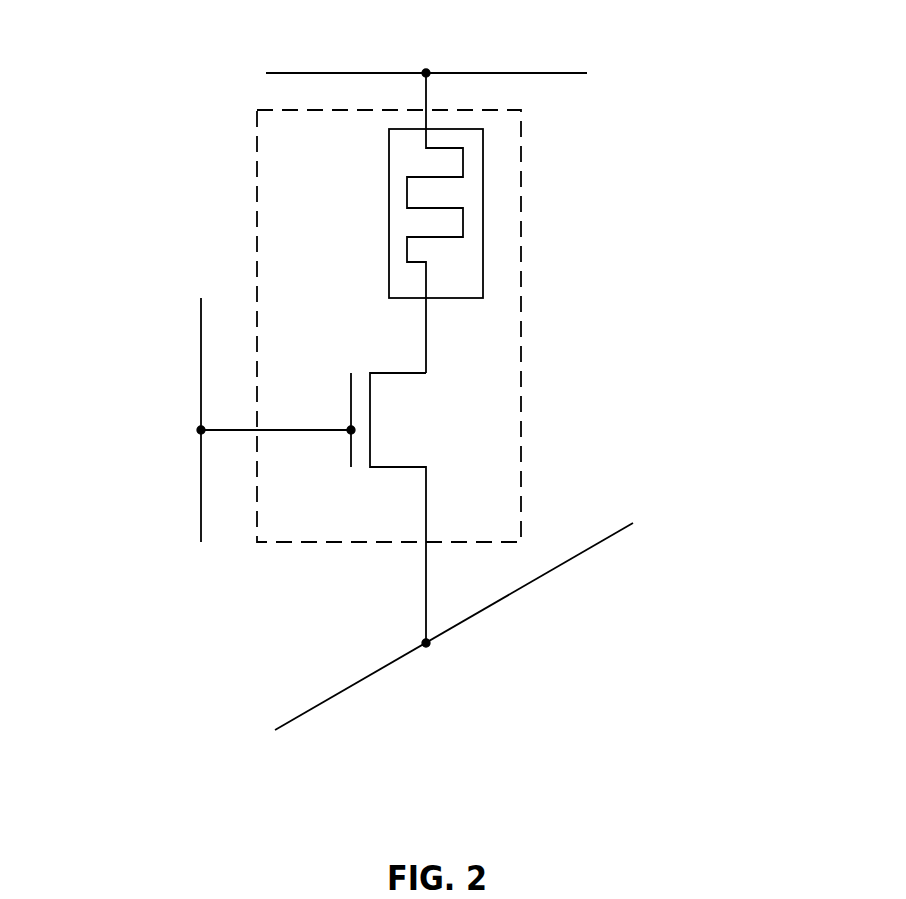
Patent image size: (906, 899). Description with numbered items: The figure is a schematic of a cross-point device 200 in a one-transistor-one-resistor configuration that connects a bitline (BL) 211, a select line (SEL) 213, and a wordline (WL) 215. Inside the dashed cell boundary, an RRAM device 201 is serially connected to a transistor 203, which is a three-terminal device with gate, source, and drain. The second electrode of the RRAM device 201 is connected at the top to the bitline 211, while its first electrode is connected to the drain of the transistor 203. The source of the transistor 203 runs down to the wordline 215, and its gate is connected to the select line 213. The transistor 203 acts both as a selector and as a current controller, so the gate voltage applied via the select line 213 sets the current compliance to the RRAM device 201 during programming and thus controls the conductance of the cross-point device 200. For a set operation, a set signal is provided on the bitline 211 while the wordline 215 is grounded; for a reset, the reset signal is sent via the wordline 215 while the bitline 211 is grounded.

The cross-point device 200 is at (258, 163).
The RRAM device 201 is at (388, 217).
The transistor 203 is at (370, 432).
The bitline (BL) 211 is at (530, 72).
The select line (SEL) 213 is at (201, 375).
The wordline (WL) 215 is at (503, 598).